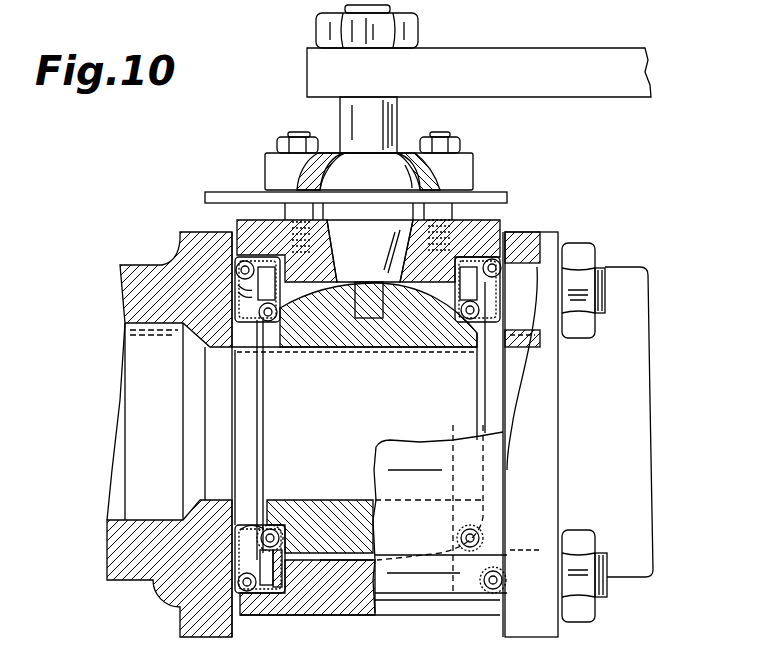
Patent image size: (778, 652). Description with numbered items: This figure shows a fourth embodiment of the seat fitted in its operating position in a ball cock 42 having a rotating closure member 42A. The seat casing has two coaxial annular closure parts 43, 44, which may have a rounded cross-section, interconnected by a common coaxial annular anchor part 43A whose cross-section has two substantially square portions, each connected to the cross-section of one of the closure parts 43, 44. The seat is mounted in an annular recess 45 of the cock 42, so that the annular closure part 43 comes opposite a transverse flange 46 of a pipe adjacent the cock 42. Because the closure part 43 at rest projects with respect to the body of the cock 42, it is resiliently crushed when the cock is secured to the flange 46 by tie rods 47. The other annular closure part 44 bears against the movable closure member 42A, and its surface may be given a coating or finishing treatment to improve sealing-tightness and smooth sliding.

The ball cock 42 is at (262, 128).
The rotating closure member 42A is at (347, 350).
The annular closure part 43 is at (240, 303).
The annular anchor part 43A is at (322, 253).
The annular closure part 44 is at (265, 517).
The annular recess 45 is at (273, 593).
The transverse flange 46 is at (185, 265).
The tie rods 47 is at (598, 313).